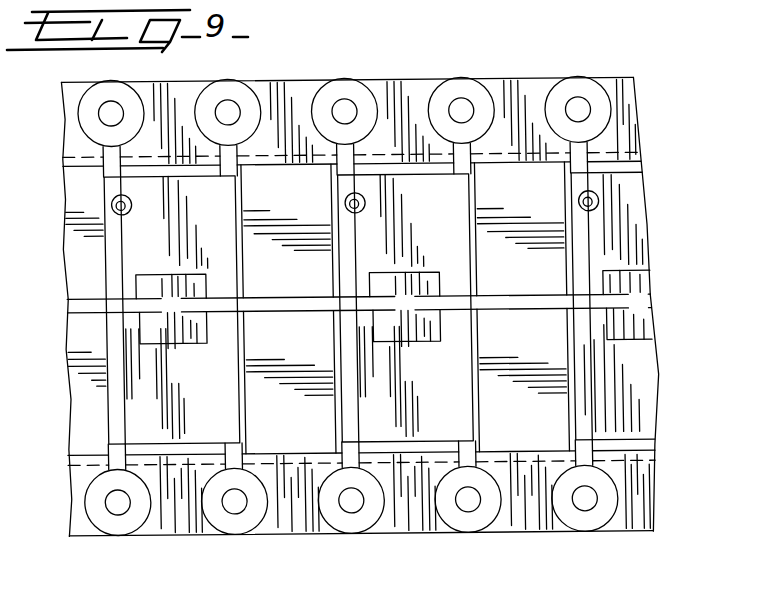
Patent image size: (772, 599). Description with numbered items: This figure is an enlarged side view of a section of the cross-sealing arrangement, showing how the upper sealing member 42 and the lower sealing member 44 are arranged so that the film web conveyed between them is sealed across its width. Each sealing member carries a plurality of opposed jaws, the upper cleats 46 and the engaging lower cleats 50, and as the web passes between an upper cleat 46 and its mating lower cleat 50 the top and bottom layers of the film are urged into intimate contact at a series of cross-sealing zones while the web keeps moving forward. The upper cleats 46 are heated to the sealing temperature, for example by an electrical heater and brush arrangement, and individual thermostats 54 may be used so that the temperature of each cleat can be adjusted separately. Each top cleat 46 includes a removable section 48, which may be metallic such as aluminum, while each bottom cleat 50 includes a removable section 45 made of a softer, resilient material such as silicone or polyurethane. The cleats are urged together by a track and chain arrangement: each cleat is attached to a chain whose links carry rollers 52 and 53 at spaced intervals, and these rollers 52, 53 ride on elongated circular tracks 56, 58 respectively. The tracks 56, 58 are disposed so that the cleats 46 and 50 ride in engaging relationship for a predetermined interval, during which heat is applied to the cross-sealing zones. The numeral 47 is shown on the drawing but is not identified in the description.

The upper sealing member 42 is at (648, 235).
The lower sealing member 44 is at (661, 400).
The removable section 45 is at (410, 335).
The upper cleat 46 is at (135, 243).
The lower die pad portion 47 is at (150, 408).
The removable section 48 is at (138, 282).
The lower cleat 50 is at (160, 342).
The roller 52 is at (128, 508).
The roller 53 is at (88, 116).
The thermostat 54 is at (112, 206).
The track 56 is at (618, 482).
The track 58 is at (622, 95).